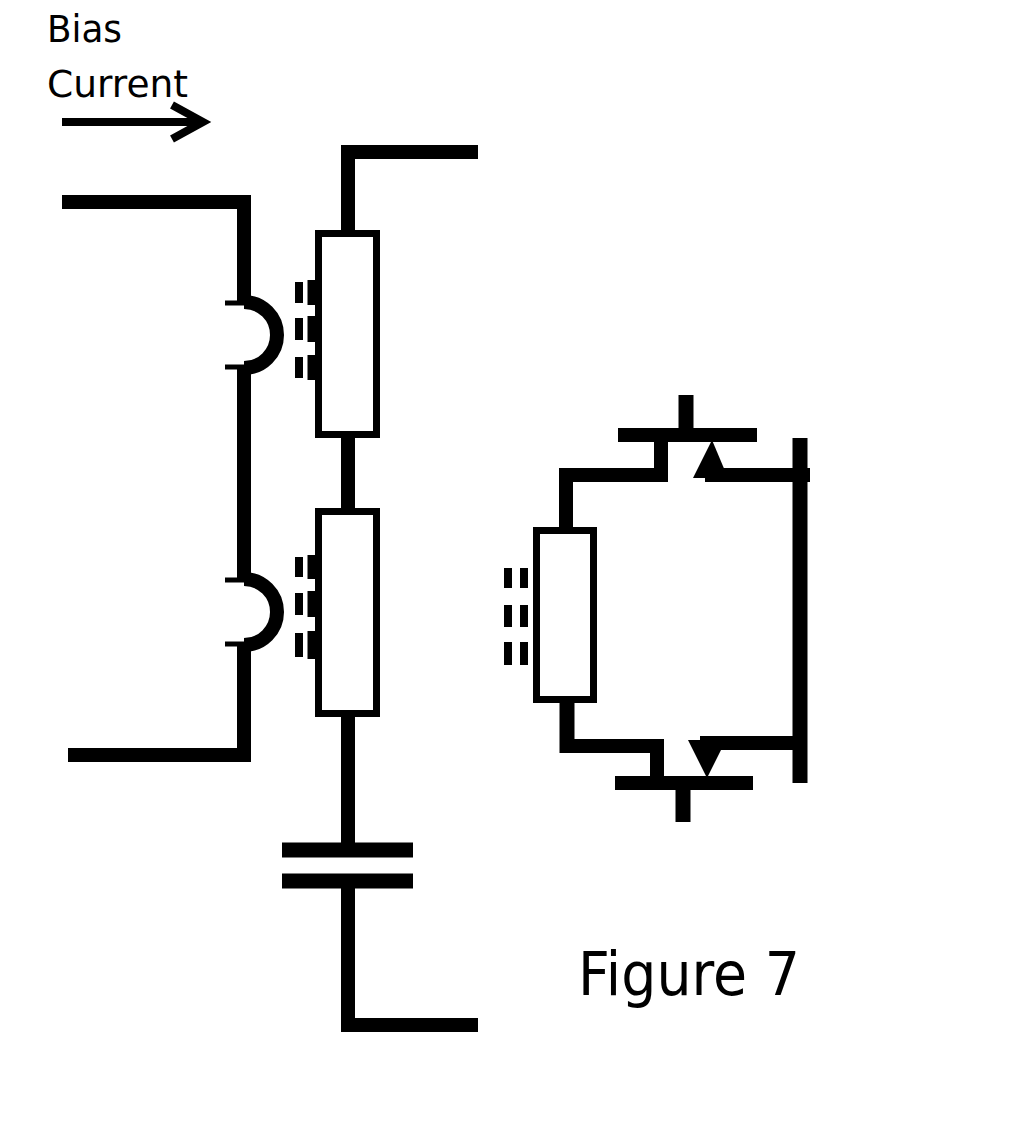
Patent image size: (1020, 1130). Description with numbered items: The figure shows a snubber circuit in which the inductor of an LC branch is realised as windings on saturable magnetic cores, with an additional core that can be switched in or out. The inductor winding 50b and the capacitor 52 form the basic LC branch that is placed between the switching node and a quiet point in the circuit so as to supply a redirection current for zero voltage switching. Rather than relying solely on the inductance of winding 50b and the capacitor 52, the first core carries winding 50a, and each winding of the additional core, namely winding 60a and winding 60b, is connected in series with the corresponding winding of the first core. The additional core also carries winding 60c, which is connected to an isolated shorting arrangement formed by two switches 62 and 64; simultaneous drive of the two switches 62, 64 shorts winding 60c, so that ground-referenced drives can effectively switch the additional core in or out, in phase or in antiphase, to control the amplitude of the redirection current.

The winding 50a is at (197, 335).
The inductor winding 50b is at (388, 375).
The capacitor 52 is at (398, 823).
The winding of additional core 60a is at (197, 612).
The winding of additional core 60b is at (397, 645).
The shorting winding 60c is at (500, 613).
The switch 62 is at (713, 410).
The switch 64 is at (700, 805).